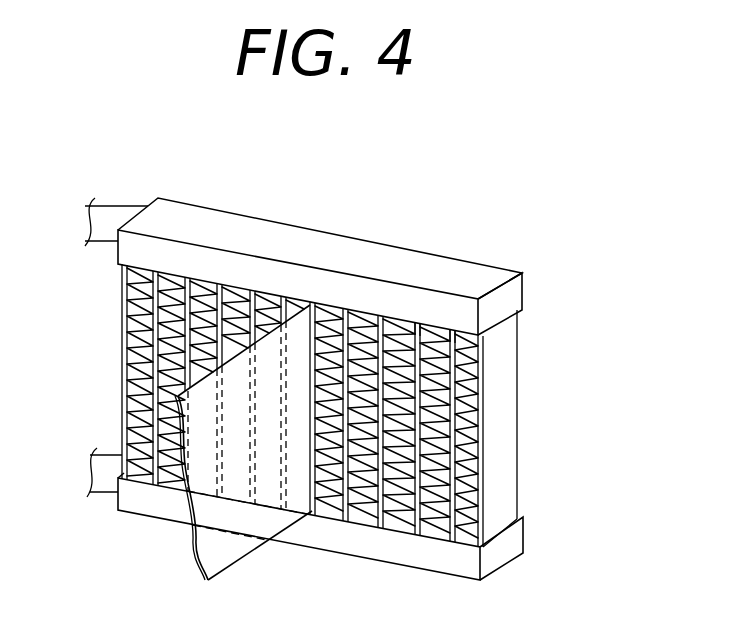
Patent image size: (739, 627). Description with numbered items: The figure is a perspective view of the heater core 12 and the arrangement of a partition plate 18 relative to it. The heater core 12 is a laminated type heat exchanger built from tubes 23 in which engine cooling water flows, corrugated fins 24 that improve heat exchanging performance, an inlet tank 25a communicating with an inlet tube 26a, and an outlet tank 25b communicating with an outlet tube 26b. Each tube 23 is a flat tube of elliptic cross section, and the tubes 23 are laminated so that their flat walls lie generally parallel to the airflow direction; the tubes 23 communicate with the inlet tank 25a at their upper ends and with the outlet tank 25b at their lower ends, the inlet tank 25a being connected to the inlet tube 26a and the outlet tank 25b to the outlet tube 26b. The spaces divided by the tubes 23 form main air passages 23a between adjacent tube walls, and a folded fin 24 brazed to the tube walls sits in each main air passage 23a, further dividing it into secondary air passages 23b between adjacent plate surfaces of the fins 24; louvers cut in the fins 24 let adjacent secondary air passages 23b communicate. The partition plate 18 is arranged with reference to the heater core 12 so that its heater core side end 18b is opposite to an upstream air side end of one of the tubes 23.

The heater core 12 is at (503, 249).
The partition plate 18 is at (233, 547).
The heater core side end 18b is at (302, 517).
The tube 23 is at (483, 357).
The main air passage 23a is at (466, 328).
The secondary air passage 23b is at (483, 428).
The corrugated fin 24 is at (483, 396).
The inlet tank 25a is at (257, 232).
The outlet tank 25b is at (153, 508).
The inlet tube 26a is at (112, 218).
The outlet tube 26b is at (105, 482).